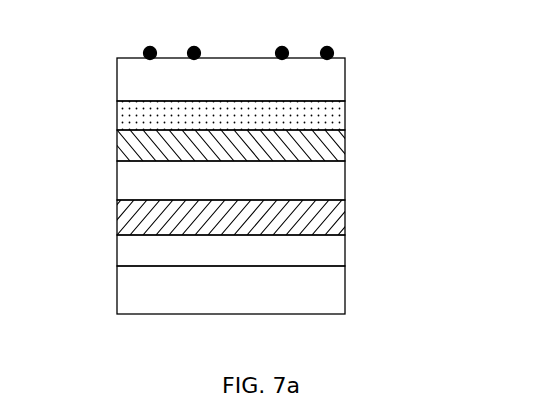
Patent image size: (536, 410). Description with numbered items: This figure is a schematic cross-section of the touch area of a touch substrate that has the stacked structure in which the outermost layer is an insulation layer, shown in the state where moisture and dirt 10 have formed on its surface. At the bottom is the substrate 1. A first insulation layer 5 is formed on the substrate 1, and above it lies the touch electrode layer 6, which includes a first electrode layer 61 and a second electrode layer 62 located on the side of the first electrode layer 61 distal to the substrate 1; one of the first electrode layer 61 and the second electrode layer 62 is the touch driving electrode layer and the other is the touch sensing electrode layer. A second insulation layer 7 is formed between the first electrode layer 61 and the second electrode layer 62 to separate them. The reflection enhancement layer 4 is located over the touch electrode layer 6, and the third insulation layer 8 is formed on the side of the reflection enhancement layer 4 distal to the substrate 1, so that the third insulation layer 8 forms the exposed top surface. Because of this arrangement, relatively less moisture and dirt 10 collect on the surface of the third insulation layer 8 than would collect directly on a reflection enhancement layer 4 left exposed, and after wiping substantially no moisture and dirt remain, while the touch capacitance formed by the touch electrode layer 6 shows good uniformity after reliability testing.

The substrate 1 is at (253, 306).
The first insulation layer 5 is at (337, 253).
The touch electrode layer 6 is at (258, 182).
The first electrode layer 61 is at (333, 212).
The second insulation layer 7 is at (130, 177).
The second electrode layer 62 is at (333, 148).
The reflection enhancement layer 4 is at (340, 123).
The third insulation layer 8 is at (130, 73).
The moisture and dirt 10 is at (202, 50).